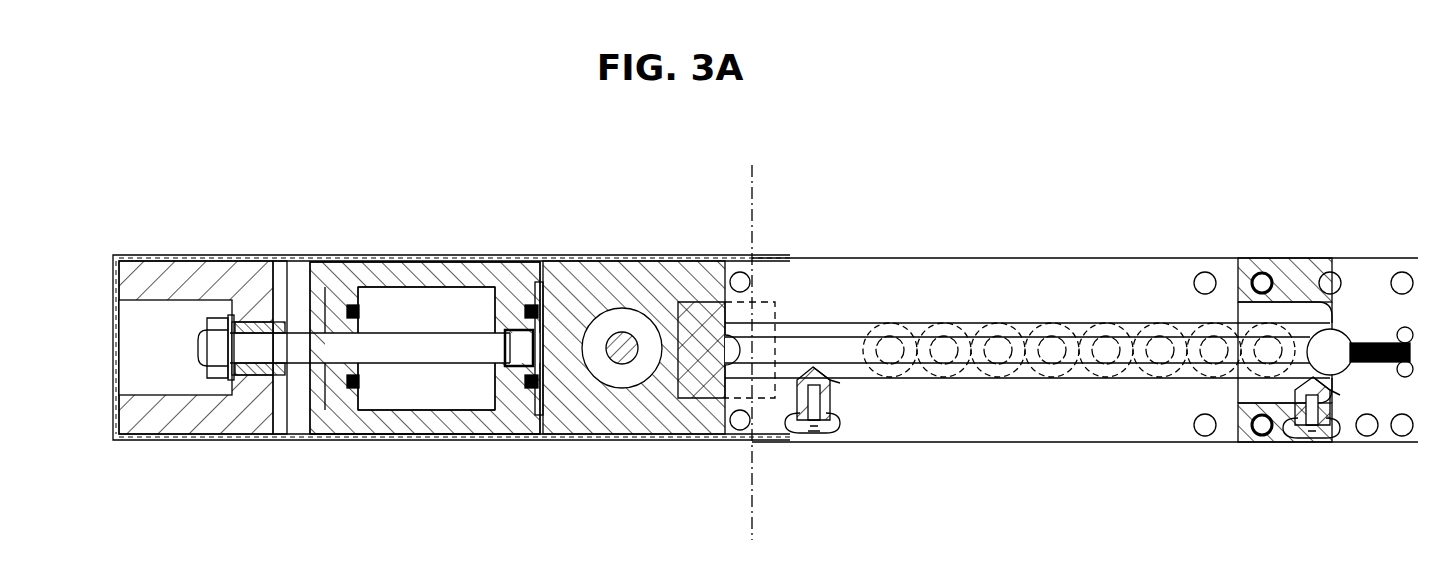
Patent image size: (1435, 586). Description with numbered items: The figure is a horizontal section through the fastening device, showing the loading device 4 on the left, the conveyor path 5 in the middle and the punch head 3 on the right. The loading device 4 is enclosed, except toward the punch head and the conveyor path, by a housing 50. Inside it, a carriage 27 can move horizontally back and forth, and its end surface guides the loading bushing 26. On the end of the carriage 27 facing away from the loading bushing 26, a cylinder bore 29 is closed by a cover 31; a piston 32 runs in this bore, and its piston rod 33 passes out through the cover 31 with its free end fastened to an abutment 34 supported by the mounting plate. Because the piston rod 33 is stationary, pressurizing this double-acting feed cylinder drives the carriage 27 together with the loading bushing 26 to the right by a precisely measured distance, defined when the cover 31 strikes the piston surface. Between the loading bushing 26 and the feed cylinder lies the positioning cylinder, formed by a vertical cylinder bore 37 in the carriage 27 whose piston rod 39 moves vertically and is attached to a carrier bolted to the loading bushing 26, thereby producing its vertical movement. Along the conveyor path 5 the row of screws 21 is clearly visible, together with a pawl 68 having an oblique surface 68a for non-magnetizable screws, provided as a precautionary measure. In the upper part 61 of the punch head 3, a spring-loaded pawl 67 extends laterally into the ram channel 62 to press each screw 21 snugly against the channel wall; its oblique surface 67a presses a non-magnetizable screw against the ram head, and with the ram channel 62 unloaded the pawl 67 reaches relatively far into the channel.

The punch head 3 is at (1393, 238).
The loading device 4 is at (133, 230).
The conveyor path 5 is at (950, 237).
The screws 21 is at (995, 323).
The loading bushing 26 is at (700, 320).
The carriage 27 is at (634, 352).
The cylinder bore 29 is at (433, 349).
The cover 31 is at (320, 272).
The piston 32 is at (510, 300).
The piston rod 33 is at (425, 317).
The abutment 34 is at (205, 278).
The cylinder bore 37 is at (645, 372).
The piston rod 39 is at (608, 368).
The housing 50 is at (115, 393).
The upper part 61 is at (1270, 275).
The ram channel 62 is at (1333, 342).
The pawl 67 is at (1340, 400).
The oblique surface 67a is at (1340, 372).
The pawl 68 is at (832, 410).
The oblique surface 68a is at (835, 380).